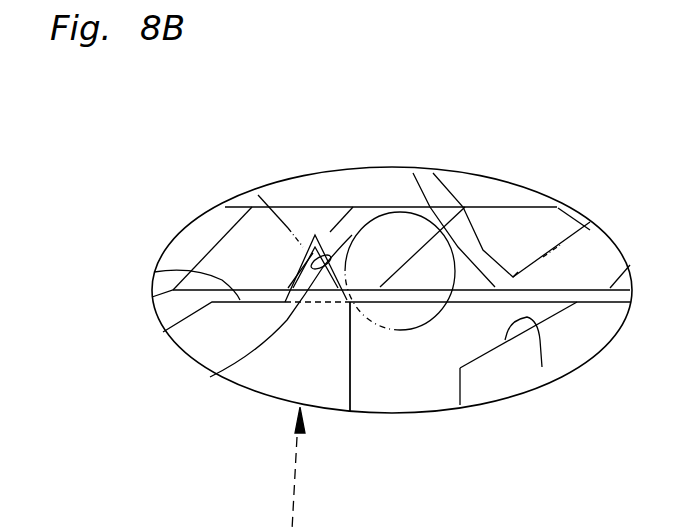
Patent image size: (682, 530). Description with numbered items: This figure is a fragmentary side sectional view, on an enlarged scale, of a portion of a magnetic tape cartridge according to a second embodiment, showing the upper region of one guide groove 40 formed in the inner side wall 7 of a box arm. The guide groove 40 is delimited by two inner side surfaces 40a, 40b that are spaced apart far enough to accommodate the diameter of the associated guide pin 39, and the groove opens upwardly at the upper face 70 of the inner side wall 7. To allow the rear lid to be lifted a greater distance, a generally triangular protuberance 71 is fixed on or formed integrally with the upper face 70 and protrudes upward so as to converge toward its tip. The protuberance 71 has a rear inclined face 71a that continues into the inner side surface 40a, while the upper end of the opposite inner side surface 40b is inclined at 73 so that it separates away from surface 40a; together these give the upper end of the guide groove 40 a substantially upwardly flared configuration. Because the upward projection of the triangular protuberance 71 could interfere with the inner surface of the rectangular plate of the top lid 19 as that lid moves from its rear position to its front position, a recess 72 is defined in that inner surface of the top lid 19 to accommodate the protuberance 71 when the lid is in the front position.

The inner side wall 7 is at (283, 372).
The top lid 19 is at (502, 205).
The guide pin 39 is at (400, 295).
The guide groove 40 is at (410, 400).
The inner side surface 40a is at (352, 385).
The inner side surface 40b is at (460, 383).
The upper face 70 is at (154, 272).
The triangular protuberance 71 is at (300, 268).
The rear inclined face 71a is at (325, 263).
The recess 72 is at (213, 375).
The inclined upper end 73 is at (542, 367).